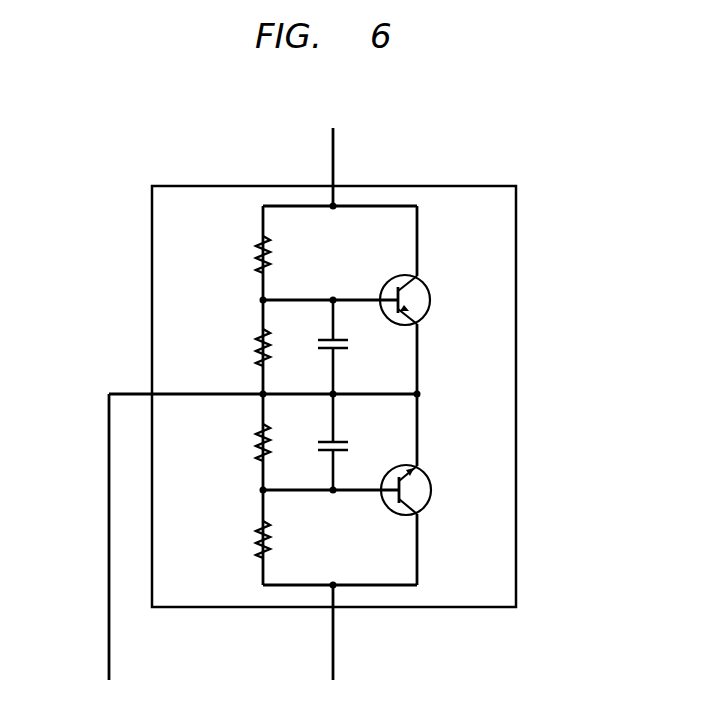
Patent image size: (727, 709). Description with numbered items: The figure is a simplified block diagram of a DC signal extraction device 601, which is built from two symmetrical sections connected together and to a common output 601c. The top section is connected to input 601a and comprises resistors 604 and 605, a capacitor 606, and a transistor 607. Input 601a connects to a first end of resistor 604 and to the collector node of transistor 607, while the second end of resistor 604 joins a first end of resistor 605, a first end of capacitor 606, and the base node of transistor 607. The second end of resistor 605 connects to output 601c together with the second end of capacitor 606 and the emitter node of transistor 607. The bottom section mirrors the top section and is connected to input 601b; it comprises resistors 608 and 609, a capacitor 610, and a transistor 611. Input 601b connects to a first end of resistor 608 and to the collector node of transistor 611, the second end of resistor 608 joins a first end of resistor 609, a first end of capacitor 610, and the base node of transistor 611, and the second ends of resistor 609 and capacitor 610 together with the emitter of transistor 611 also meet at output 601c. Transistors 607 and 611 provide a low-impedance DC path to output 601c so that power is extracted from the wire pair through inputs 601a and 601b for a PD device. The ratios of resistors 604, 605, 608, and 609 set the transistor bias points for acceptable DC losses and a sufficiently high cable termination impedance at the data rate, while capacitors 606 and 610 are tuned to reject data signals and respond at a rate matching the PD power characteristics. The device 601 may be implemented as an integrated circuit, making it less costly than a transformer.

The DC signal extraction device 601 is at (516, 218).
The input 601a is at (333, 153).
The input 601b is at (333, 650).
The output 601c is at (109, 650).
The resistor 604 is at (254, 252).
The resistor 605 is at (254, 347).
The capacitor 606 is at (348, 342).
The transistor 607 is at (432, 292).
The resistor 608 is at (254, 535).
The resistor 609 is at (254, 440).
The capacitor 610 is at (348, 446).
The transistor 611 is at (432, 482).